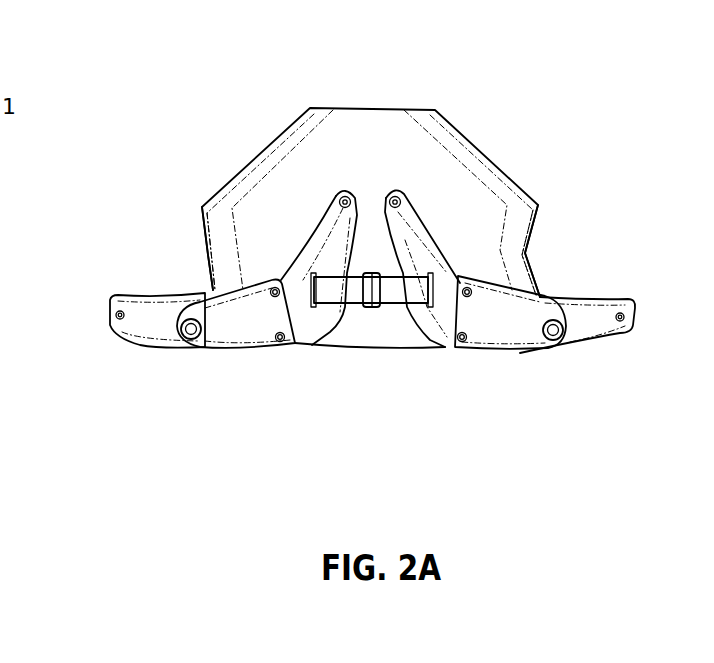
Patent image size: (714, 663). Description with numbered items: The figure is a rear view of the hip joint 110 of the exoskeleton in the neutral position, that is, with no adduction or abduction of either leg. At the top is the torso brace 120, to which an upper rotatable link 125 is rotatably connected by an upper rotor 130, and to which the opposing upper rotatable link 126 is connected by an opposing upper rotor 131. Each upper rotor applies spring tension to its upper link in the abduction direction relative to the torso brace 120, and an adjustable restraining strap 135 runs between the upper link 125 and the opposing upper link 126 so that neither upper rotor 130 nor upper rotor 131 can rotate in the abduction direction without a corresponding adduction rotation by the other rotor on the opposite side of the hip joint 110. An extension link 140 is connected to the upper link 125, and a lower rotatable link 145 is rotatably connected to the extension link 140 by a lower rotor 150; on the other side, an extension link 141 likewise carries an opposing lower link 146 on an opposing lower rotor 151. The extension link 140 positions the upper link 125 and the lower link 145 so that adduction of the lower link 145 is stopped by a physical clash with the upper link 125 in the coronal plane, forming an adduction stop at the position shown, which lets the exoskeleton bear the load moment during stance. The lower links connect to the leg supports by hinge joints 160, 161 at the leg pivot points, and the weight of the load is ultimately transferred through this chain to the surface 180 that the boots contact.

The hip joint 110 is at (578, 231).
The torso brace 120 is at (392, 153).
The upper rotatable link 125 is at (481, 250).
The opposing upper rotatable link 126 is at (300, 275).
The upper rotor 130 is at (404, 197).
The opposing upper rotor 131 is at (337, 198).
The adjustable restraining strap 135 is at (327, 306).
The extension link 140 is at (497, 338).
The extension link 141 is at (247, 338).
The lower rotatable link 145 is at (612, 325).
The opposing lower link 146 is at (163, 318).
The lower rotor 150 is at (555, 342).
The opposing lower rotor 151 is at (192, 341).
The hinge joint 160 is at (620, 313).
The hinge joint 161 is at (116, 315).
The surface 180 is at (0, 496).